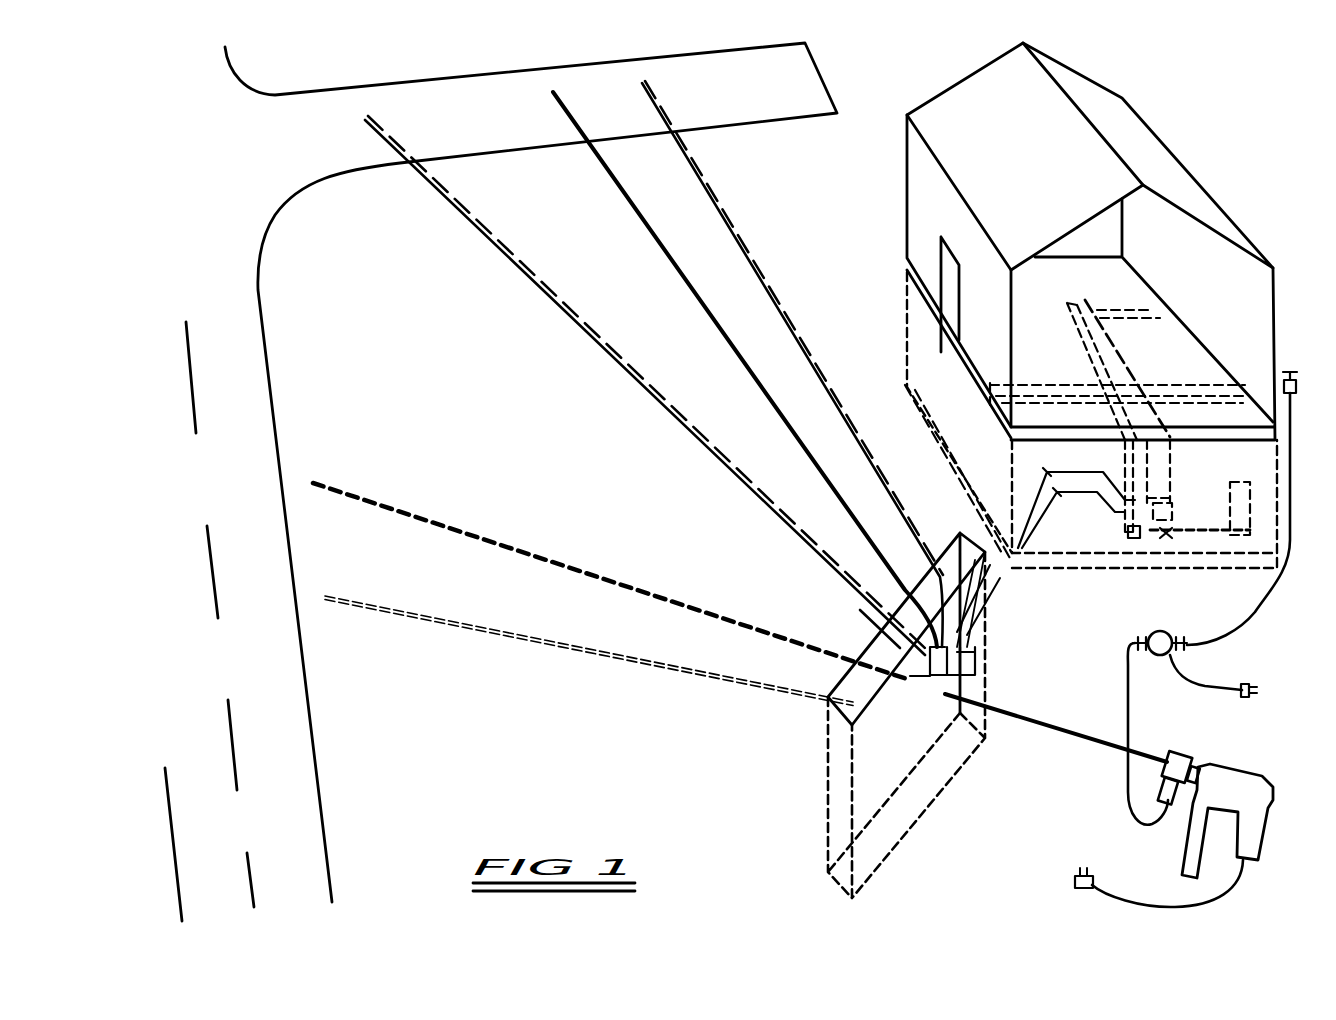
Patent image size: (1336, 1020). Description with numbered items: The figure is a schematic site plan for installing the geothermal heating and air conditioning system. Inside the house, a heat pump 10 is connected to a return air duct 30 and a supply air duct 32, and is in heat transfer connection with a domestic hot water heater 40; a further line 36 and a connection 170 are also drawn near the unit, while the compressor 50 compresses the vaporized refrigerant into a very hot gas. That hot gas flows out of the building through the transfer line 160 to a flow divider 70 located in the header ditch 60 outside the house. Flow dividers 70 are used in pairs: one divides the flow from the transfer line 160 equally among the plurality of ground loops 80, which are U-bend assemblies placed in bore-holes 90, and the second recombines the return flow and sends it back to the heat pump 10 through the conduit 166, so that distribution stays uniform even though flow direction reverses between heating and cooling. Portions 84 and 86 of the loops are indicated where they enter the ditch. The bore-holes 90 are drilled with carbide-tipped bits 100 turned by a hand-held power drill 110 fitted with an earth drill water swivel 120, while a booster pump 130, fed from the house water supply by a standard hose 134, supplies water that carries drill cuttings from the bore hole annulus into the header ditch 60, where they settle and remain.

The heat pump 10 is at (1175, 512).
The return air duct 30 is at (1087, 370).
The supply air duct 32 is at (1115, 372).
The connection line 36 is at (1172, 535).
The domestic hot water heater 40 is at (1237, 490).
The compressor 50 is at (1167, 503).
The header ditch 60 is at (828, 765).
The flow divider 70 is at (962, 675).
The ground loops (U-bend assemblies) 80 is at (493, 237).
The pipe section 84 is at (878, 628).
The pipe section 86 is at (918, 676).
The bore-holes 90 is at (422, 617).
The carbide-tipped bits/stems 100 is at (1050, 730).
The power drill 110 is at (1263, 822).
The earth drill water swivel 120 is at (1176, 752).
The booster pump 130 is at (1175, 655).
The hose 134 is at (1242, 508).
The transfer line (discharge line) 160 is at (1000, 553).
The conduit (liquid line) 166 is at (1000, 580).
The wiring 170 is at (1133, 535).